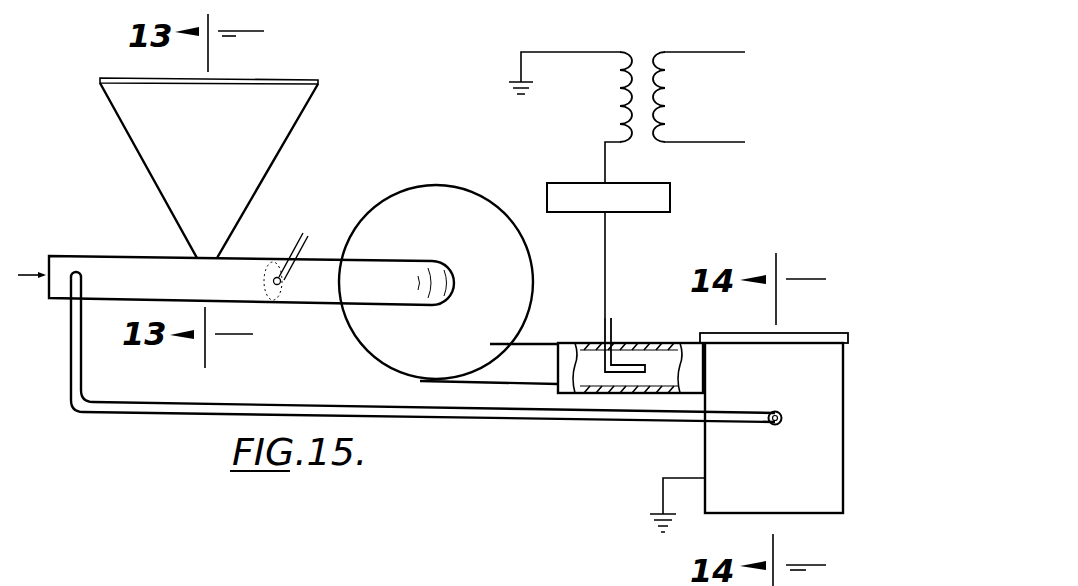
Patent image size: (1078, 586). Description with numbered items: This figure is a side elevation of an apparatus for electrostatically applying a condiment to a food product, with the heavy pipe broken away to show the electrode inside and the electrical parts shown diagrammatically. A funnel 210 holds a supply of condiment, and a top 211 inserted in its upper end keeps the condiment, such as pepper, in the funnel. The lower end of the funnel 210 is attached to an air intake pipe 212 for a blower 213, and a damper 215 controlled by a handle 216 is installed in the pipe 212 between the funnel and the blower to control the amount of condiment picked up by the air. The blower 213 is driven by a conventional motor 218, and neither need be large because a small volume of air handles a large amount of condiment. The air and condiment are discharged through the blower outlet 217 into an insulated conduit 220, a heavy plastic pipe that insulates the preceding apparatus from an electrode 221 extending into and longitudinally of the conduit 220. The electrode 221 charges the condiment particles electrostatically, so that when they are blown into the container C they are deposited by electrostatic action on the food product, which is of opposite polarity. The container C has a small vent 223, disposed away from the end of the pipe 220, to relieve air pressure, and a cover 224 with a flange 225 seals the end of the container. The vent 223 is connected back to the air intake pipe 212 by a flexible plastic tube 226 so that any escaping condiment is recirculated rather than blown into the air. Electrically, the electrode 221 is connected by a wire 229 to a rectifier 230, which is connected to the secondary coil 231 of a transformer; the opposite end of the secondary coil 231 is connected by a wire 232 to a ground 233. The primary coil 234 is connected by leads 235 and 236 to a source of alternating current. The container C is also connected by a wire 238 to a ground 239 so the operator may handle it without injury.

The funnel 210 is at (149, 147).
The top 211 is at (251, 80).
The air intake pipe 212 is at (146, 258).
The blower 213 is at (468, 184).
The damper 215 is at (283, 286).
The handle 216 is at (302, 245).
The blower outlet 217 is at (533, 350).
The motor 218 is at (495, 582).
The insulated conduit 220 is at (578, 340).
The electrode 221 is at (622, 362).
The vent 223 is at (774, 412).
The cover 224 is at (732, 320).
The flange 225 is at (846, 338).
The tube 226 is at (82, 350).
The wire 229 is at (605, 250).
The rectifier 230 is at (670, 207).
The secondary coil 231 is at (617, 116).
The wire 232 is at (567, 50).
The ground 233 is at (532, 84).
The primary coil 234 is at (672, 111).
The lead 235 is at (722, 53).
The lead 236 is at (728, 146).
The wire 238 is at (678, 478).
The ground 239 is at (660, 514).
The container C is at (820, 482).